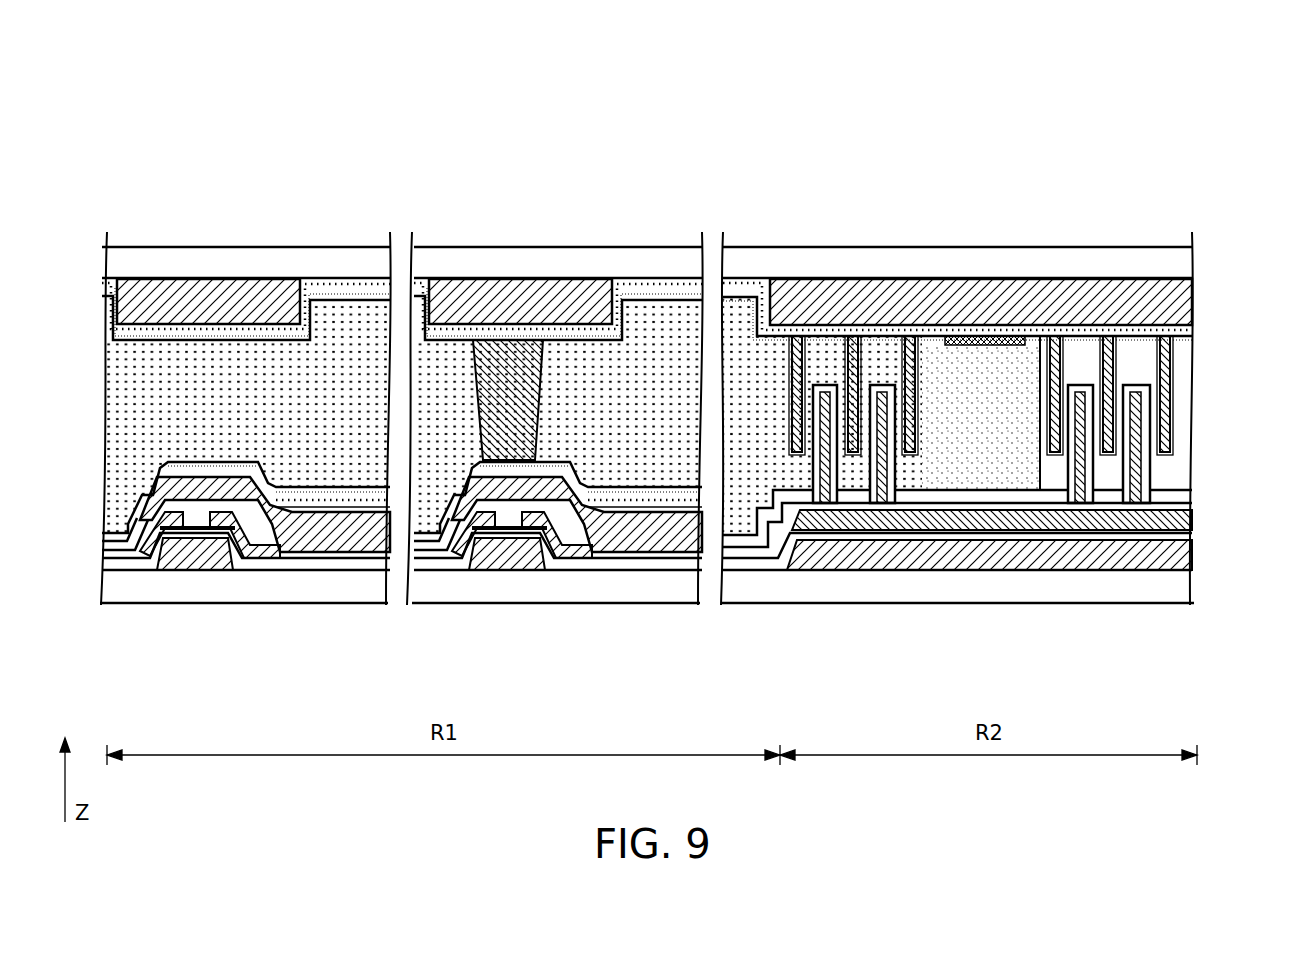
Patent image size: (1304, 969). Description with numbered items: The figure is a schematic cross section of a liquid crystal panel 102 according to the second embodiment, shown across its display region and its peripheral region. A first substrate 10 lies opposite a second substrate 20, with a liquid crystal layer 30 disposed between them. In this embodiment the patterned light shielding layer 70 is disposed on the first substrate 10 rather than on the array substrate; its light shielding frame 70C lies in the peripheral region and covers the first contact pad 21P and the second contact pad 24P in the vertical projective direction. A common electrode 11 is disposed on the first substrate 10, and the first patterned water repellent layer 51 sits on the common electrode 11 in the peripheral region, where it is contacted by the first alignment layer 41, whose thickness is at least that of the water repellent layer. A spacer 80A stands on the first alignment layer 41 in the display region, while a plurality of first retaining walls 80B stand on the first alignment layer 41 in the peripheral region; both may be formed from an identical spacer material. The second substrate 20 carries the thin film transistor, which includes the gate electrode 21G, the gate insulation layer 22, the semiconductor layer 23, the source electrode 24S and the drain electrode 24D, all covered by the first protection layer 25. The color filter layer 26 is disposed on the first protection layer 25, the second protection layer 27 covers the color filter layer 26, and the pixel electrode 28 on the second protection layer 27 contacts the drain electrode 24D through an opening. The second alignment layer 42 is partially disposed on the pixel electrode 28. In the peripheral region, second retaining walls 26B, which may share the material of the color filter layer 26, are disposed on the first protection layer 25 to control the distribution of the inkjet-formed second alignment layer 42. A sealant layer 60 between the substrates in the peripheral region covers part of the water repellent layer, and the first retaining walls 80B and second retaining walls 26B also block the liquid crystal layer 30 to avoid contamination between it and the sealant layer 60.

The liquid crystal panel 102 is at (1165, 102).
The first substrate 10 is at (1172, 262).
The common electrode 11 is at (1158, 305).
The second substrate 20 is at (1172, 582).
The gate electrode 21G is at (197, 560).
The first contact pad 21P is at (1063, 555).
The gate insulation layer 22 is at (302, 562).
The semiconductor layer 23 is at (165, 527).
The source electrode 24S is at (177, 532).
The drain electrode 24D is at (252, 550).
The second contact pad 24P is at (990, 520).
The first protection layer 25 is at (322, 556).
The color filter layer 26 is at (342, 530).
The second retaining wall 26B is at (1137, 470).
The second protection layer 27 is at (130, 500).
The pixel electrode 28 is at (365, 507).
The liquid crystal layer 30 is at (130, 408).
The first alignment layer 41 is at (323, 288).
The second alignment layer 42 is at (270, 478).
The first patterned water repellent layer 51 is at (988, 338).
The sealant layer 60 is at (1015, 372).
The patterned light shielding layer 70 is at (198, 313).
The light shielding frame 70C is at (1060, 308).
The spacer 80A is at (508, 412).
The first retaining wall 80B is at (797, 395).